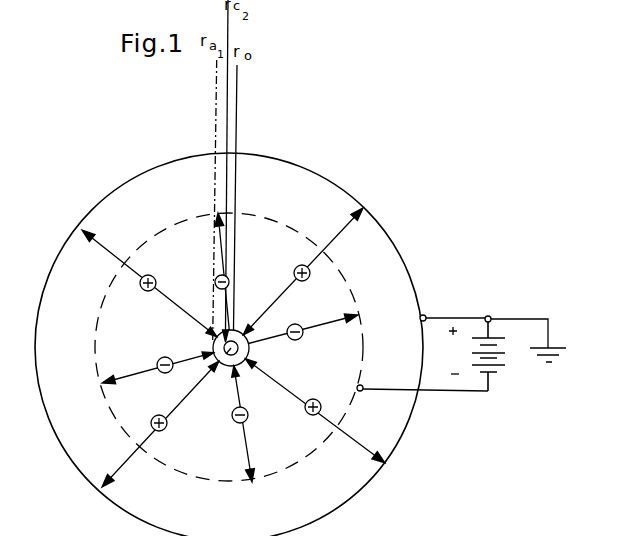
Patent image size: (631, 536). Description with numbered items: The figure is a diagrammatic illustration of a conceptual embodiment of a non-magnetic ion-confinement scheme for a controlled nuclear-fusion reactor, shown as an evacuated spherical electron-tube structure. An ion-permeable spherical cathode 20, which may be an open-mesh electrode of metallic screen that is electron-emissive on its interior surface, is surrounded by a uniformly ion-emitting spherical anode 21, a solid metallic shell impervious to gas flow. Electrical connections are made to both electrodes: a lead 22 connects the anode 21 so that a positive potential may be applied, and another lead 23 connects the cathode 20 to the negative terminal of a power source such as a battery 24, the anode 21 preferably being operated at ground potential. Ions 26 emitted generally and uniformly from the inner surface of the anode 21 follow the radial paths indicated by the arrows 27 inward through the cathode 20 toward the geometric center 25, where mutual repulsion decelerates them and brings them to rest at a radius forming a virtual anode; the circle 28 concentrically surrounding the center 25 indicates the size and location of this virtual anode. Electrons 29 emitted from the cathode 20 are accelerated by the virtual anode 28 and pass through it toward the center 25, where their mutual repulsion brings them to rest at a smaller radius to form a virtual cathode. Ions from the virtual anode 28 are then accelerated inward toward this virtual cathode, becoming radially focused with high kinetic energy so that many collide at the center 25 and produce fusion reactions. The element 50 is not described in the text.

The spherical cathode 20 is at (352, 275).
The spherical anode 21 is at (417, 283).
The lead 22 is at (468, 318).
The lead 23 is at (458, 392).
The battery 24 is at (500, 370).
The geometric center 25 is at (233, 353).
The ions 26 is at (147, 291).
The arrows 27 is at (180, 308).
The virtual anode circle 28 is at (237, 330).
The electrons 29 is at (215, 281).
The central electrode lead 50 is at (225, 360).